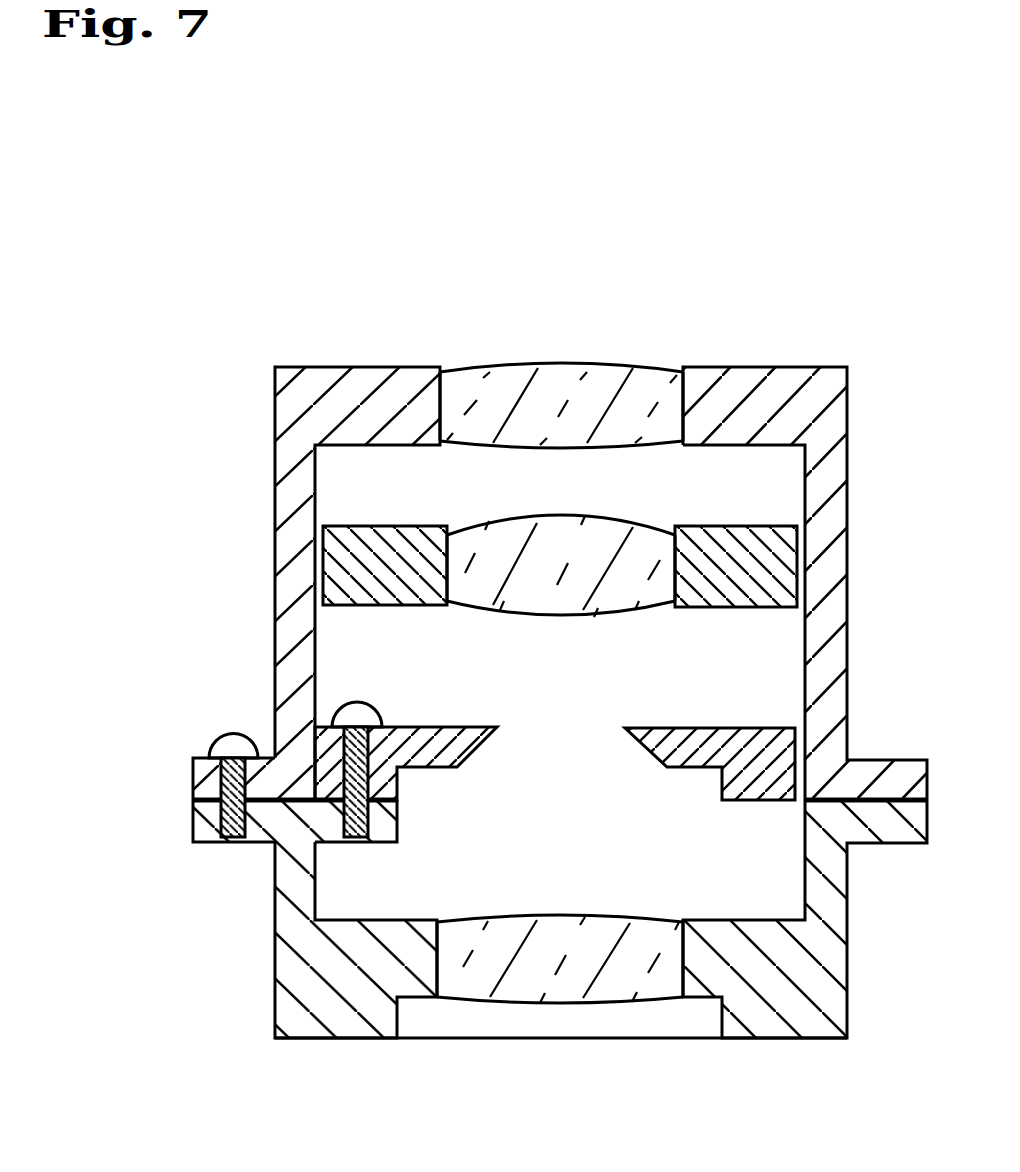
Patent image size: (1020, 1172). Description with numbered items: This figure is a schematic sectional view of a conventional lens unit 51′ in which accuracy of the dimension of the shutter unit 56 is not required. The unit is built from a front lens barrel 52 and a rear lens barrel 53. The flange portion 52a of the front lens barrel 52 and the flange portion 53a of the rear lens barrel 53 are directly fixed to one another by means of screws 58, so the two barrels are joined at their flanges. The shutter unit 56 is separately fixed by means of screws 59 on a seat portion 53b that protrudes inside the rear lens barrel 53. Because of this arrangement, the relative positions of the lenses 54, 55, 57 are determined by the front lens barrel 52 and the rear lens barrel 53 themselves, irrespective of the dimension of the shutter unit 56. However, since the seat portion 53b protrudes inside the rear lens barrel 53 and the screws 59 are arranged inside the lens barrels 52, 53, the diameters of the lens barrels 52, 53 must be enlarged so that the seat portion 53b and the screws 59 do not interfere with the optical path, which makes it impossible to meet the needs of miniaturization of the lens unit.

The lens unit 51′ is at (416, 296).
The front lens barrel 52 is at (275, 497).
The flange portion 52a is at (190, 781).
The rear lens barrel 53 is at (275, 937).
The flange portion 53a is at (190, 818).
The seat portion 53b is at (375, 843).
The lens 54 is at (597, 367).
The lens 55 is at (593, 607).
The shutter unit 56 is at (480, 742).
The lens 57 is at (551, 990).
The screw 58 is at (228, 733).
The screw 59 is at (383, 704).